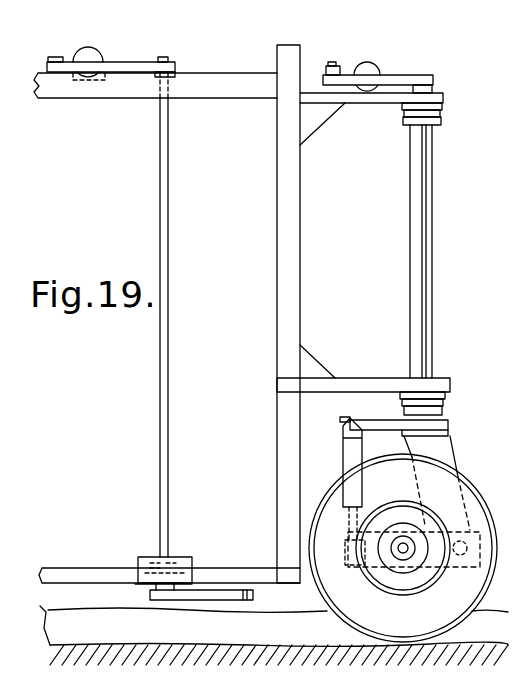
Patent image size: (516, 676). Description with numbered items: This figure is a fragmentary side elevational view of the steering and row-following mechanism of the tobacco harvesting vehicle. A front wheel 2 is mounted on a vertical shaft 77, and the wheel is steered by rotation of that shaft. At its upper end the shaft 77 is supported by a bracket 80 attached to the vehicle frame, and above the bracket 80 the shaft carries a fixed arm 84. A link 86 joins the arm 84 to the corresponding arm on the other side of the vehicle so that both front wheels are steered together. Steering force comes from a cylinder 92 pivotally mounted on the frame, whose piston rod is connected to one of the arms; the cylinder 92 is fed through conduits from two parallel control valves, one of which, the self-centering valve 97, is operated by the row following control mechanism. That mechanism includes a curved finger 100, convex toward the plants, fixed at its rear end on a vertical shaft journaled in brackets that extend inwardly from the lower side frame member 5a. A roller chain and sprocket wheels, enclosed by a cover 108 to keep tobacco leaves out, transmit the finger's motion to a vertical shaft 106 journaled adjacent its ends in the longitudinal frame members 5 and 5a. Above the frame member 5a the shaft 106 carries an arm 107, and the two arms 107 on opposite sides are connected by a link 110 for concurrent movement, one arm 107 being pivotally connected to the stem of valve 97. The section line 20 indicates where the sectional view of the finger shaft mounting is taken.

The front wheel 2 is at (452, 500).
The longitudinal frame member 5 is at (205, 92).
The lower side frame member 5a is at (104, 567).
The section line 20- 20 is at (262, 65).
The vertical shaft 77 is at (421, 157).
The bracket 80 is at (434, 97).
The arm 84 is at (386, 80).
The link 86 is at (337, 64).
The cylinder 92 is at (371, 66).
The control valve 97 is at (90, 52).
The finger 100 is at (185, 599).
The vertical shaft 106 is at (169, 192).
The arm 107 is at (128, 62).
The cover 108 is at (191, 560).
The link 110 is at (61, 57).